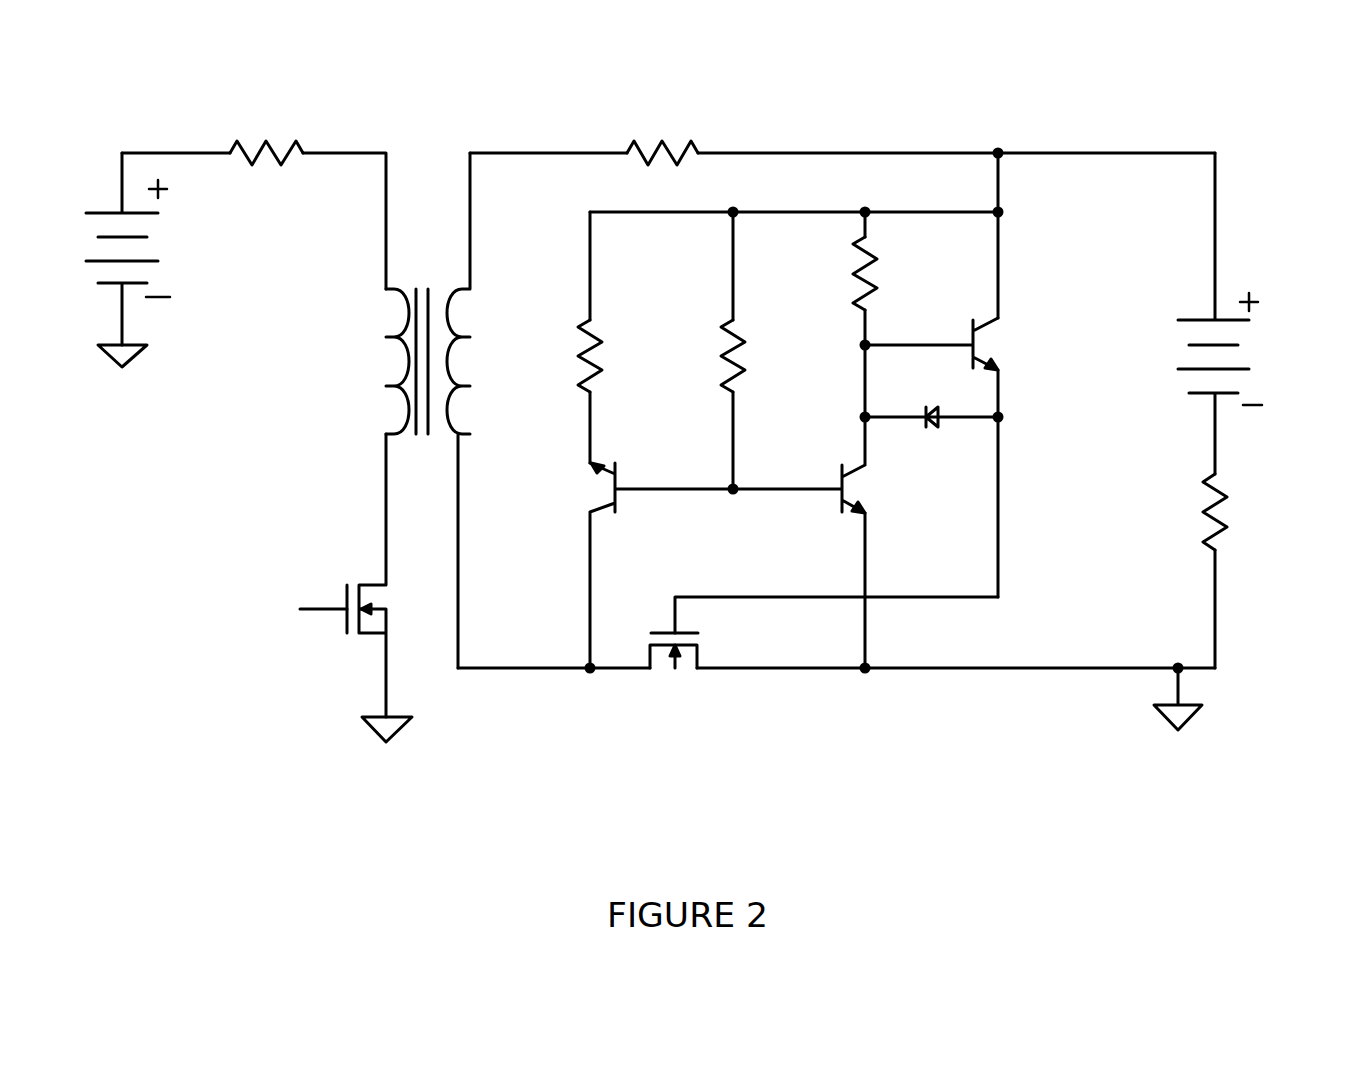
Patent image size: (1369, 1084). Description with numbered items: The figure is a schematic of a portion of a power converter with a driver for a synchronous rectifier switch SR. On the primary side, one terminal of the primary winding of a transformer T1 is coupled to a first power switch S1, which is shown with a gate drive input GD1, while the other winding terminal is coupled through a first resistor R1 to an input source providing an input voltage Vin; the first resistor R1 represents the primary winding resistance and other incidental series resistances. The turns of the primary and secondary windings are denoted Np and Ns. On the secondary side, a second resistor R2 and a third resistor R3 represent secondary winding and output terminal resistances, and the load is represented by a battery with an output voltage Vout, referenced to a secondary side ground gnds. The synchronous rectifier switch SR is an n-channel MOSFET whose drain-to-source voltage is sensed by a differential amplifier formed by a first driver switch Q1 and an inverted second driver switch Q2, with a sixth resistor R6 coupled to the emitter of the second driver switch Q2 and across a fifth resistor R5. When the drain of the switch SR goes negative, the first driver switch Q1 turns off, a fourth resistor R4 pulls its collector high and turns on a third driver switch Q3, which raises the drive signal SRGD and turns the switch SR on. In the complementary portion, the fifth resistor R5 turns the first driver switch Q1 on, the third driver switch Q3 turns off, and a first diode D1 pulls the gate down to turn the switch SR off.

The input voltage Vin is at (152, 260).
The first resistor R1 is at (254, 192).
The transformer T1 is at (415, 410).
The primary winding turns Np is at (371, 361).
The secondary winding turns Ns is at (472, 410).
The first power switch S1 is at (389, 588).
The gate drive input GD1 is at (311, 632).
The second resistor R2 is at (842, 136).
The sixth resistor R6 is at (609, 337).
The fifth resistor R5 is at (758, 350).
The fourth resistor R4 is at (837, 278).
The third driver switch Q3 is at (957, 356).
The first diode D1 is at (931, 437).
The first driver switch Q1 is at (819, 542).
The second driver switch Q2 is at (639, 554).
The synchronous rectifier switch SR is at (671, 660).
The drive signal SRGD is at (836, 590).
The output voltage Vout is at (1252, 313).
The third resistor R3 is at (1192, 571).
The secondary side ground gnds is at (1216, 705).